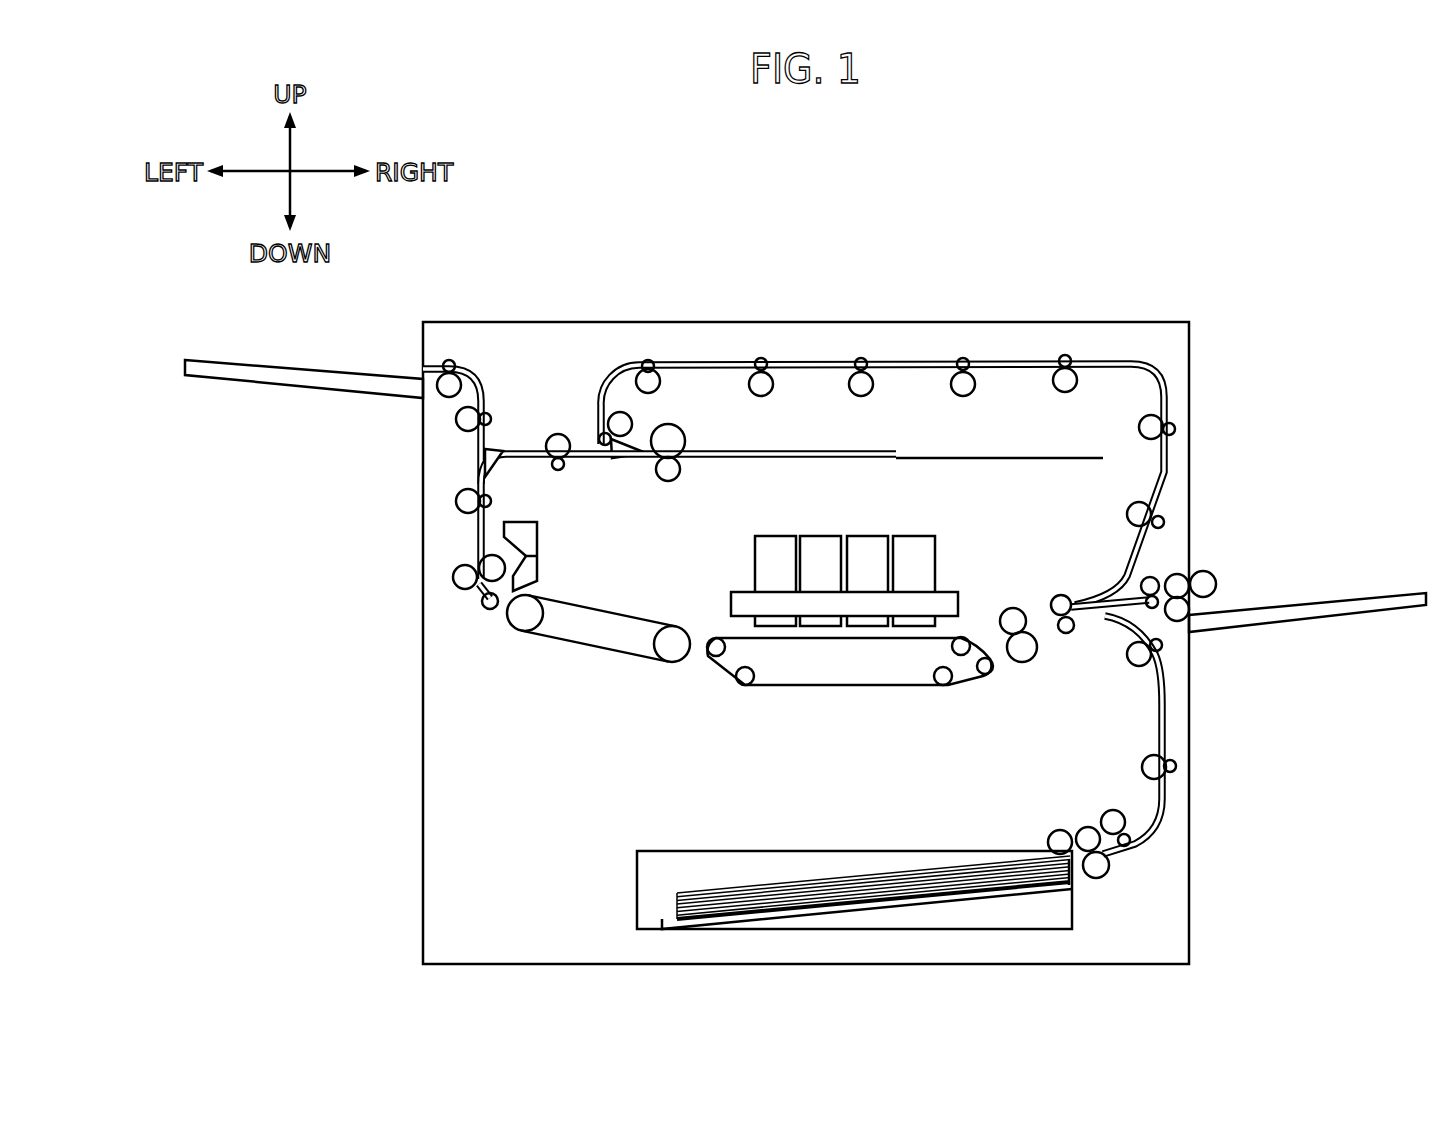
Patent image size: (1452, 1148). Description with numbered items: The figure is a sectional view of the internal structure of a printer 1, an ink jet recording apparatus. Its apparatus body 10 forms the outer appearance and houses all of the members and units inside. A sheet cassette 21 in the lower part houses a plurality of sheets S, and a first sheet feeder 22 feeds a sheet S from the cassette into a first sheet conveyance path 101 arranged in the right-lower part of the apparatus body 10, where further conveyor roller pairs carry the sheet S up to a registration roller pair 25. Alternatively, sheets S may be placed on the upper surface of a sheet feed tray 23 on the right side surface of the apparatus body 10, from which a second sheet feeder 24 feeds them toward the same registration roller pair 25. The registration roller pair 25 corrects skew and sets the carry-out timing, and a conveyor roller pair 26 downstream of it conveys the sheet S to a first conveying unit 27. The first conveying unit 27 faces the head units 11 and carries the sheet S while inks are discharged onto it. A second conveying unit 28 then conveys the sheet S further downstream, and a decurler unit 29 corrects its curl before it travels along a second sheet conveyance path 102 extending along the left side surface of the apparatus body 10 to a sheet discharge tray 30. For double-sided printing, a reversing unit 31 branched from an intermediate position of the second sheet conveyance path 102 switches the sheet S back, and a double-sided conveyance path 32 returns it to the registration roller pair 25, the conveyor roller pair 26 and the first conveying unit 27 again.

The printer 1 is at (1058, 296).
The apparatus body 10 is at (1188, 368).
The head units 11 is at (740, 540).
The sheet cassette 21 is at (634, 893).
The first sheet feeder 22 is at (1084, 822).
The sheet feed tray 23 is at (1333, 600).
The second sheet feeder 24 is at (1206, 567).
The registration roller pair 25 is at (1058, 590).
The conveyor roller pair 26 is at (1029, 624).
The first conveying unit 27 is at (823, 695).
The second conveying unit 28 is at (592, 594).
The decurler unit 29 is at (478, 606).
The sheet discharge tray 30 is at (268, 358).
The reversing unit 31 is at (912, 440).
The double-sided conveyance path 32 is at (597, 404).
The first sheet conveyance path 101 is at (1166, 715).
The second sheet conveyance path 102 is at (478, 463).
The sheet S is at (860, 870).